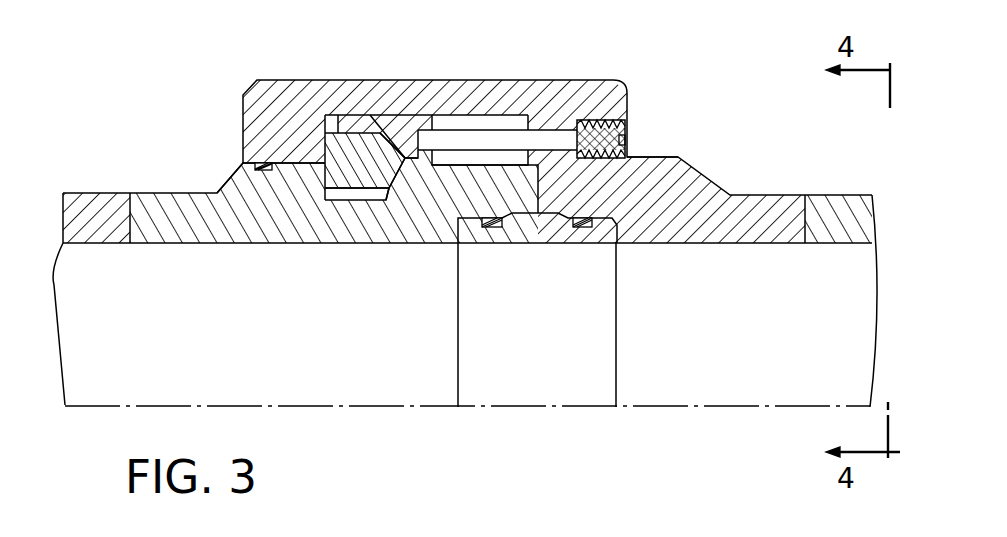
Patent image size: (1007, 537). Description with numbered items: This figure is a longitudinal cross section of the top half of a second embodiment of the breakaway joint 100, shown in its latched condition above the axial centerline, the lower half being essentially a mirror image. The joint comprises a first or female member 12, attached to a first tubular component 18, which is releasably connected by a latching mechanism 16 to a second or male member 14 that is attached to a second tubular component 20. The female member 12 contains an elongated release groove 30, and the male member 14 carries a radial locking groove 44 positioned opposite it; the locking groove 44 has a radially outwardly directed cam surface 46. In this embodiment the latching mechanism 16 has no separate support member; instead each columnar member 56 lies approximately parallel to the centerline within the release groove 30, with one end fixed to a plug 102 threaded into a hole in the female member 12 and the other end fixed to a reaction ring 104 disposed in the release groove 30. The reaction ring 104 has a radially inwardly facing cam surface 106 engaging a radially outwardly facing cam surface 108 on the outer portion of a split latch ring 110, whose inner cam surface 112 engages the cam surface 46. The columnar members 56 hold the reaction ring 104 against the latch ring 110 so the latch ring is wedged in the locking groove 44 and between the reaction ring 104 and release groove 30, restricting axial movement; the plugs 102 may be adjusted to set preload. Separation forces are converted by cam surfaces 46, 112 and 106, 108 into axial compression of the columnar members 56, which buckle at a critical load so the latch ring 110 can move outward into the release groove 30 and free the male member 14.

The breakaway joint 100 is at (150, 78).
The first member 12 is at (718, 162).
The second member 14 is at (190, 182).
The latching mechanism 16 is at (577, 72).
The first component 18 is at (838, 195).
The second component 20 is at (103, 192).
The release groove 30 is at (470, 118).
The locking groove 44 is at (336, 197).
The cam surface 46 is at (382, 198).
The columnar member 56 is at (510, 130).
The plug 102 is at (627, 131).
The reaction ring 104 is at (404, 114).
The cam surface 106 is at (362, 130).
The cam surface 108 is at (404, 160).
The split latch ring 110 is at (336, 124).
The cam surface 112 is at (408, 177).